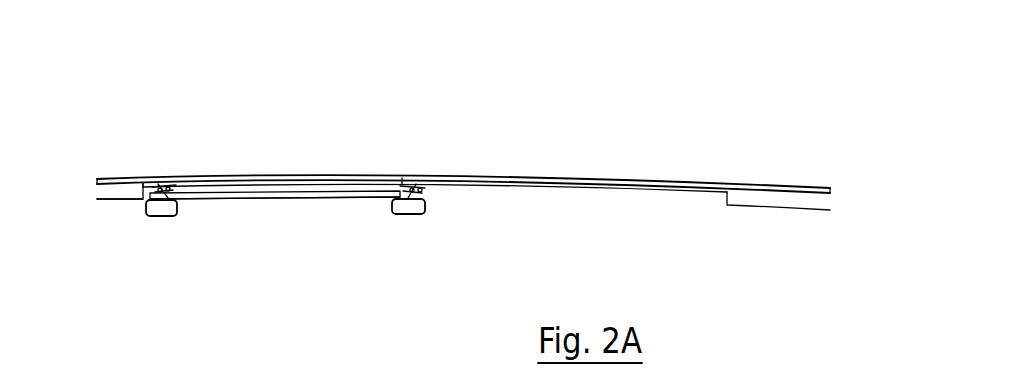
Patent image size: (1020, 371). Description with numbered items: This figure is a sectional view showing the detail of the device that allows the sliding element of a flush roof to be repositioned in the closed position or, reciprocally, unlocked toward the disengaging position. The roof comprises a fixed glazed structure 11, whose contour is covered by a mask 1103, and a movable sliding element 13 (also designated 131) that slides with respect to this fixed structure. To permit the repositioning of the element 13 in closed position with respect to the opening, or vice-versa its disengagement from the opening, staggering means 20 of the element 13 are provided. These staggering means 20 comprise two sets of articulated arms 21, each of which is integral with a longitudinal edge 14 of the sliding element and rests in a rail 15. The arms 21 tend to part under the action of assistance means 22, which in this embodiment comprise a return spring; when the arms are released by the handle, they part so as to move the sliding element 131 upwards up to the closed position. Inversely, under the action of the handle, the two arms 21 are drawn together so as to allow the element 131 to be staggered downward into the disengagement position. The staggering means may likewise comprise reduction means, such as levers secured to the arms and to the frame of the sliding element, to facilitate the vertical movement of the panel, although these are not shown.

The fixed glazed structure 11 is at (103, 178).
The mask 1103 is at (117, 200).
The sliding element 13 is at (322, 199).
The movable sliding element 131 is at (370, 212).
The longitudinal edge 14 is at (158, 216).
The rail 15 is at (262, 184).
The staggering means 20 is at (178, 135).
The articulated arms 21 is at (160, 184).
The assistance means 22 is at (166, 186).